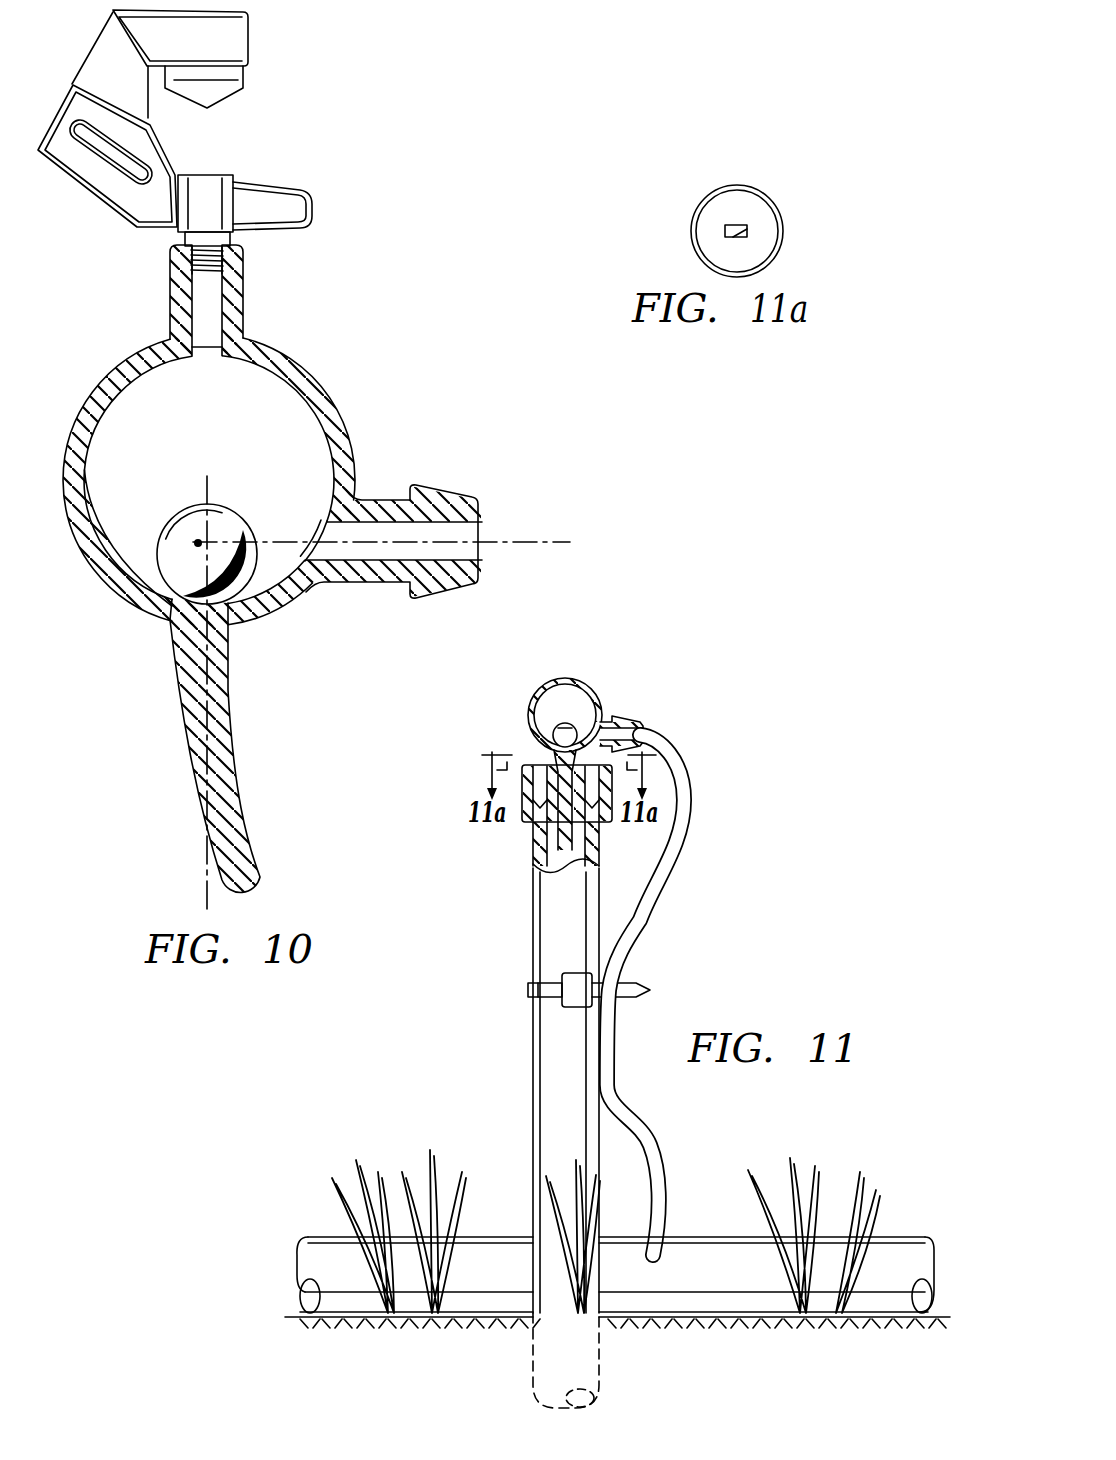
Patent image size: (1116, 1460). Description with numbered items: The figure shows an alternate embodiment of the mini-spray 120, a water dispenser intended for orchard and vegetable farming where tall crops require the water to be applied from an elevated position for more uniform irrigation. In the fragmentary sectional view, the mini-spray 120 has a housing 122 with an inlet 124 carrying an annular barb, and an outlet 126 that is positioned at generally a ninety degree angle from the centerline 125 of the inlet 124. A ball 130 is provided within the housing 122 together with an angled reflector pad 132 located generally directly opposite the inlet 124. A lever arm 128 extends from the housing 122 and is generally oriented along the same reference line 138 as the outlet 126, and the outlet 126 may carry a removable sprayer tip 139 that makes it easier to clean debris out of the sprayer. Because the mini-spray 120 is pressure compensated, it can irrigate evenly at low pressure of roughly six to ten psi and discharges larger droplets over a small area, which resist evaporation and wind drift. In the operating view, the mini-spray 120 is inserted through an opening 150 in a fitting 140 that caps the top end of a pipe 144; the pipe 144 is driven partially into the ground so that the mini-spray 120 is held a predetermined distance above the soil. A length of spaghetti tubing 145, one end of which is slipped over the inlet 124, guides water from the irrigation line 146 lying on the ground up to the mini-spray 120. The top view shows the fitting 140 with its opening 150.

In FIG. 10, the mini-spray 120 is at (345, 306).
In FIG. 11, the mini-spray 120 is at (630, 653).
In FIG. 10, the housing 122 is at (107, 375).
In FIG. 10, the inlet 124 is at (457, 488).
In FIG. 10, the centerline 125 is at (527, 541).
In FIG. 10, the outlet 126 is at (210, 296).
In FIG. 10, the lever arm 128 is at (240, 745).
In FIG. 10, the ball 130 is at (247, 490).
In FIG. 10, the angled reflector pad 132 is at (130, 472).
In FIG. 10, the reference line 138 is at (208, 697).
In FIG. 10, the removable sprayer tip 139 is at (262, 46).
In FIG. 11, the fitting 140 is at (567, 793).
In FIG. 11A, the fitting 140 is at (690, 172).
In FIG. 11, the pipe 144 is at (538, 852).
In FIG. 11, the spaghetti tubing 145 is at (658, 863).
In FIG. 11, the irrigation line 146 is at (700, 1237).
In FIG. 11A, the opening 150 is at (737, 225).